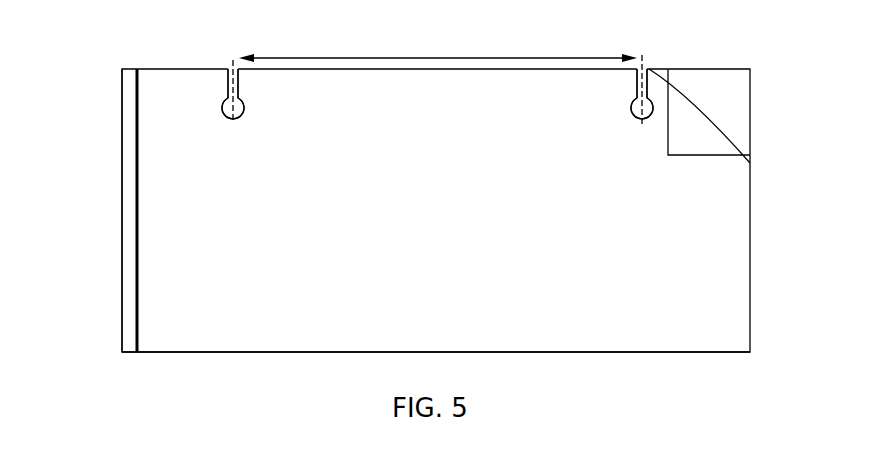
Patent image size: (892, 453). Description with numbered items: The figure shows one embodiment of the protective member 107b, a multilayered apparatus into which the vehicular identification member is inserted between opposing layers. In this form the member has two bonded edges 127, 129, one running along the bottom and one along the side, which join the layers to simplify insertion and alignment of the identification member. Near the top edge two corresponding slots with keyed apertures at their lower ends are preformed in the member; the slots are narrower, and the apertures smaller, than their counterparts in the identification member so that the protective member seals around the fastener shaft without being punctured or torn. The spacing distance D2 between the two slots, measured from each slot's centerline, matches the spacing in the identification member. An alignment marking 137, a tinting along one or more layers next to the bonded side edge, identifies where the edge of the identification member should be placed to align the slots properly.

The protective member 107b is at (118, 40).
The bonded edge 129 is at (122, 203).
The alignment marking 137 is at (138, 240).
The bonded edge 127 is at (242, 357).
The spacing distance D2 is at (420, 57).